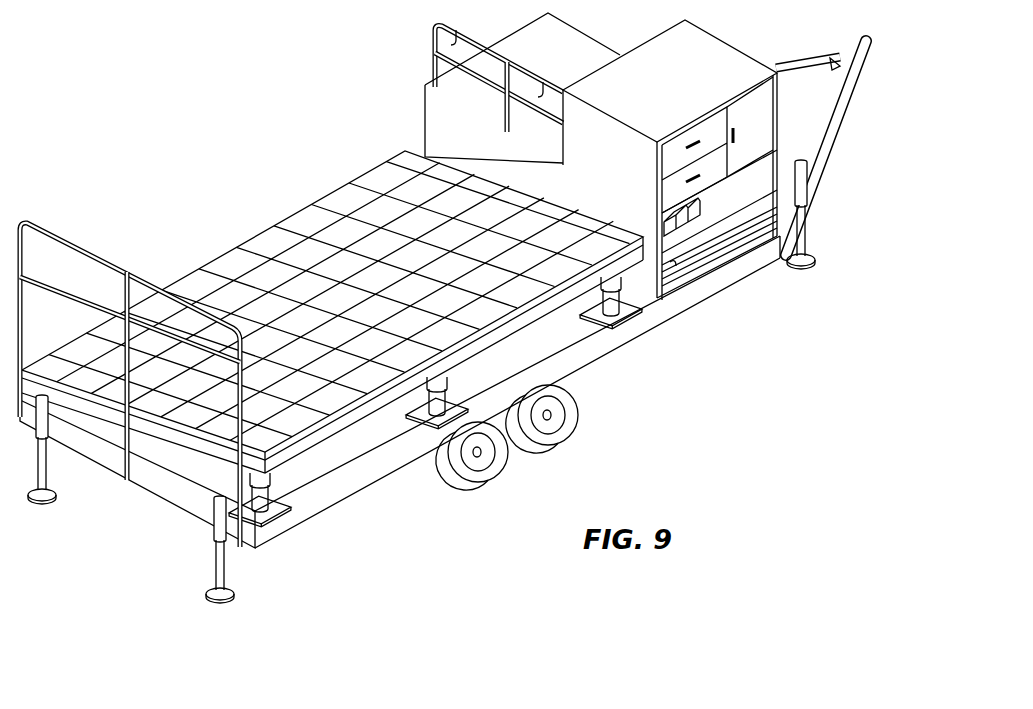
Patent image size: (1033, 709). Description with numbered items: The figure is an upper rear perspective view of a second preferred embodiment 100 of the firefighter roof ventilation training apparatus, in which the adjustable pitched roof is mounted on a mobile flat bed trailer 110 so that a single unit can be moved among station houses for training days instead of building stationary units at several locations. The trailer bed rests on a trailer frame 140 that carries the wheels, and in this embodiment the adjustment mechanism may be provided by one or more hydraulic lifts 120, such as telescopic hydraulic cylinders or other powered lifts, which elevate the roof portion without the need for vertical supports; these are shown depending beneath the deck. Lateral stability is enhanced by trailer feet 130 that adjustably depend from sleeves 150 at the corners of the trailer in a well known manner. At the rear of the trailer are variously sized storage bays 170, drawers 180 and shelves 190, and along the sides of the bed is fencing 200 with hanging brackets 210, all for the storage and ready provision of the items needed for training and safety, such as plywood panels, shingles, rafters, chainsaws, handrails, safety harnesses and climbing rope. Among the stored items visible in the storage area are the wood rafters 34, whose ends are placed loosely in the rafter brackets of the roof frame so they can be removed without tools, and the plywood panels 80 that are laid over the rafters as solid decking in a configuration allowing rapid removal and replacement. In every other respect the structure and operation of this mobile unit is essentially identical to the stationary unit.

The second preferred embodiment 100 is at (112, 97).
The mobile flat bed trailer 110 is at (310, 222).
The hydraulic lifts 120 is at (263, 497).
The trailer feet 130 is at (217, 562).
The frame 140 is at (552, 342).
The sleeves 150 is at (213, 530).
The storage bays 170 is at (767, 172).
The drawers 180 is at (668, 147).
The shelves 190 is at (713, 227).
The fencing 200 is at (76, 240).
The hanging brackets 210 is at (537, 93).
The wood rafters 34 is at (700, 237).
The plywood panels 80 is at (673, 267).